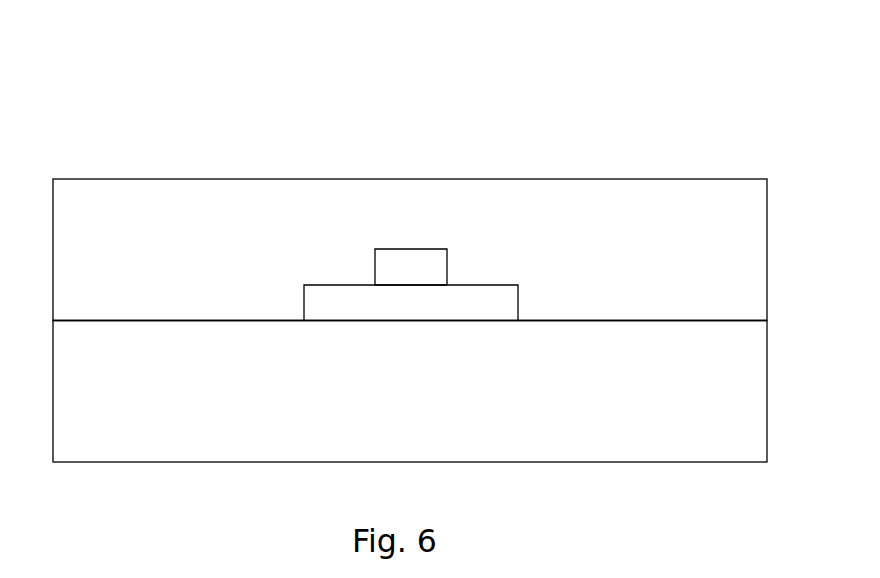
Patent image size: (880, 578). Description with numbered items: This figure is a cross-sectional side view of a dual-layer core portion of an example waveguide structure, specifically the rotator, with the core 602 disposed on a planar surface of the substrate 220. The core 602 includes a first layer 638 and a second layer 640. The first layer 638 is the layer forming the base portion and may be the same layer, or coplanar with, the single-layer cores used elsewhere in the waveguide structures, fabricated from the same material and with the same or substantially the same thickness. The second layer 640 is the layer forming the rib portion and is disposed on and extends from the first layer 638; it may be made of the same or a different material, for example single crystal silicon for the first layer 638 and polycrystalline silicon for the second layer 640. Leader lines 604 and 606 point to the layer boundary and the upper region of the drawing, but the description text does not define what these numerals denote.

The substrate 220 is at (115, 357).
The core 602 is at (412, 285).
The layer boundary 604 is at (233, 320).
The upper layer 606 is at (588, 213).
The first layer 638 is at (475, 303).
The second layer 640 is at (402, 267).